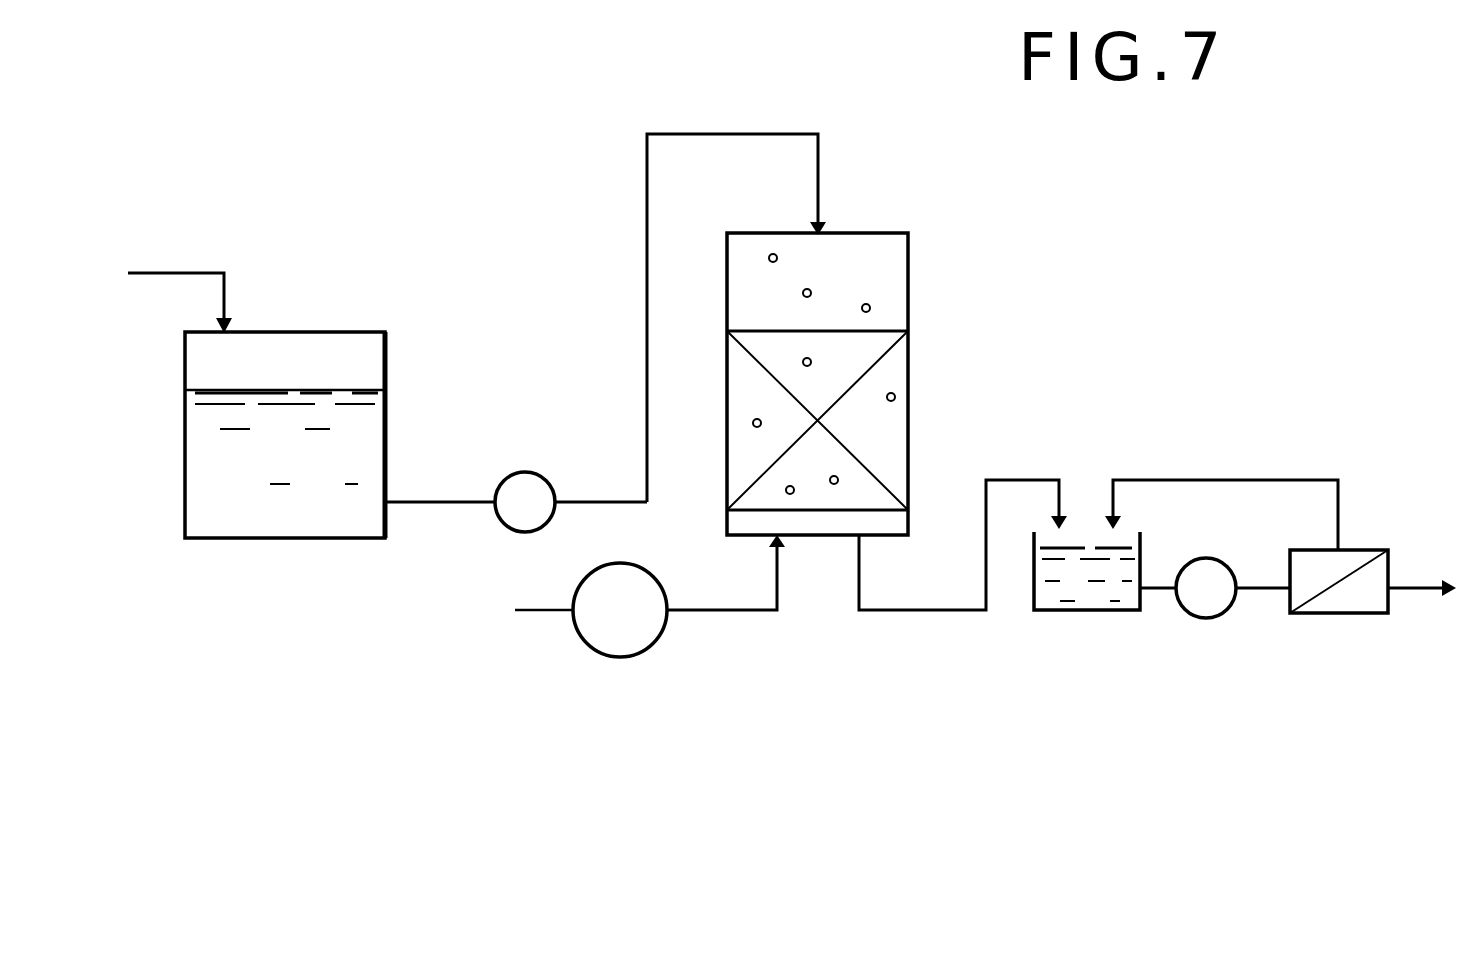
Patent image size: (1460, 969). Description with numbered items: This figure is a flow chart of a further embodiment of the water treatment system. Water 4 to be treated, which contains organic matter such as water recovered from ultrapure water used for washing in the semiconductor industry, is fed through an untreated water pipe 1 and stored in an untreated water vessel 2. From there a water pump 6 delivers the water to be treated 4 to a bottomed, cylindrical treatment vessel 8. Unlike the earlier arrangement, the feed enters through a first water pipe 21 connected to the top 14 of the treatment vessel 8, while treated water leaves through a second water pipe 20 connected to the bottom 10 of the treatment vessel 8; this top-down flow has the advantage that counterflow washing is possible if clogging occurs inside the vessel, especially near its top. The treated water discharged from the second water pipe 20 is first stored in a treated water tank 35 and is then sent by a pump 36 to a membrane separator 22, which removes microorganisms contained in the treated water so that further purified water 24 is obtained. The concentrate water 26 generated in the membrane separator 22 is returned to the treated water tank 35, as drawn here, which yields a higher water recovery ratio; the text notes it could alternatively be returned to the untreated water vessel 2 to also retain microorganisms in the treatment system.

The untreated water pipe 1 is at (190, 273).
The untreated water vessel 2 is at (350, 332).
The water to be treated 4 is at (367, 440).
The water pump 6 is at (536, 472).
The treatment vessel 8 is at (910, 302).
The bottom of the treatment vessel 10 is at (740, 537).
The top of the treatment vessel 14 is at (748, 232).
The second water pipe 20 is at (943, 613).
The first water pipe 21 is at (818, 178).
The membrane separator 22 is at (1362, 548).
The purified water 24 is at (1420, 592).
The concentrate water 26 is at (1183, 480).
The treated water tank 35 is at (1088, 612).
The pump 36 is at (1212, 618).